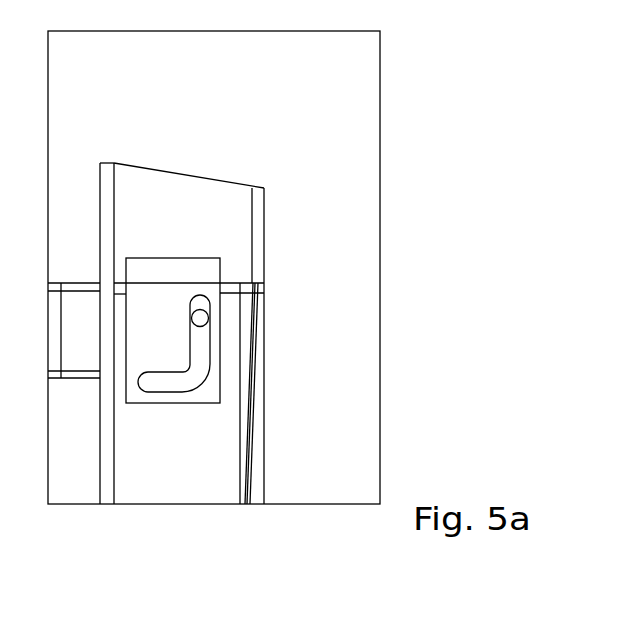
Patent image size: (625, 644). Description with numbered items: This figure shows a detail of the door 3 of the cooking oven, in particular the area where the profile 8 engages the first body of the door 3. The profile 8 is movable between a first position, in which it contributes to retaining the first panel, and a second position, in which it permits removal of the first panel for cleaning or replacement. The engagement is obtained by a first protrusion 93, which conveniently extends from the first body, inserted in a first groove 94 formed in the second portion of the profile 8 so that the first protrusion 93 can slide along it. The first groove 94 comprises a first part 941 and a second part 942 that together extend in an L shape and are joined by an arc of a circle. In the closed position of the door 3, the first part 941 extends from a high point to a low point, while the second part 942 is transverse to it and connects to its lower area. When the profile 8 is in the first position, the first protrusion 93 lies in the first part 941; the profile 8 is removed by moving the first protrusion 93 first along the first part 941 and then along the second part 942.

The profile 8 is at (192, 172).
The door 3 is at (271, 176).
The first protrusion 93 is at (216, 311).
The first groove 94 is at (251, 384).
The first part 941 is at (218, 329).
The second part 942 is at (169, 404).